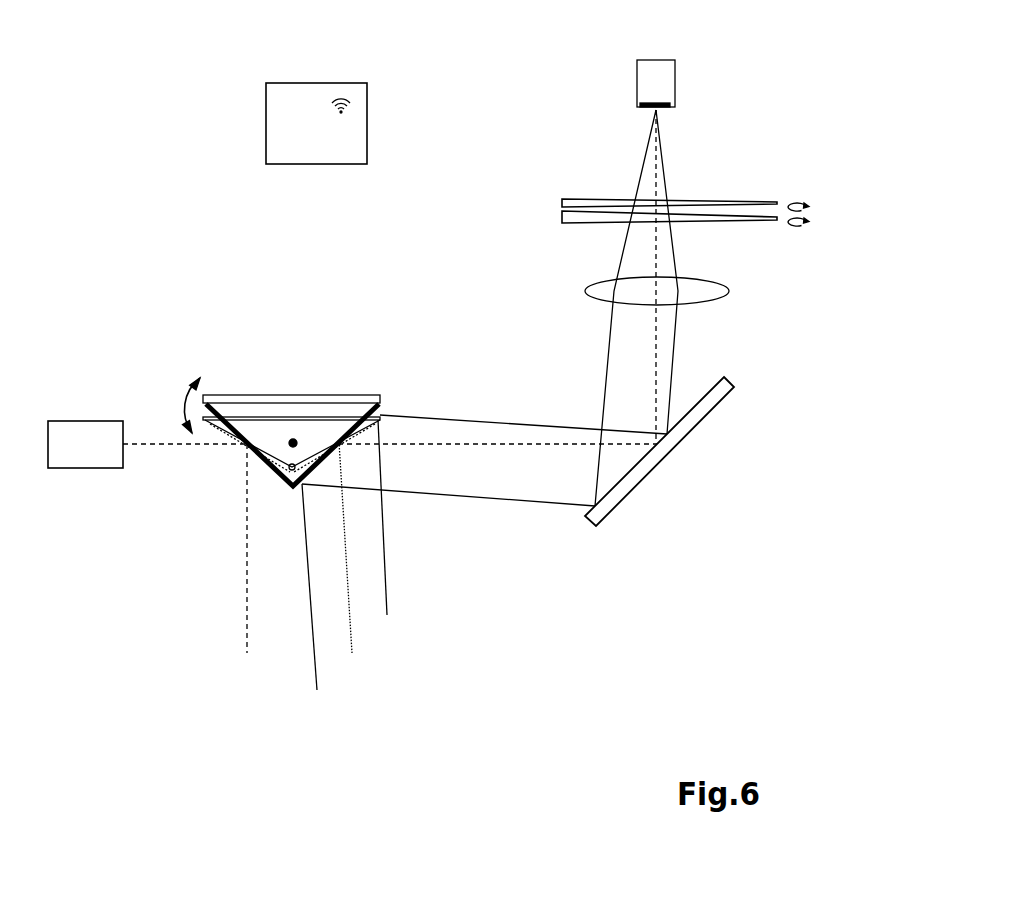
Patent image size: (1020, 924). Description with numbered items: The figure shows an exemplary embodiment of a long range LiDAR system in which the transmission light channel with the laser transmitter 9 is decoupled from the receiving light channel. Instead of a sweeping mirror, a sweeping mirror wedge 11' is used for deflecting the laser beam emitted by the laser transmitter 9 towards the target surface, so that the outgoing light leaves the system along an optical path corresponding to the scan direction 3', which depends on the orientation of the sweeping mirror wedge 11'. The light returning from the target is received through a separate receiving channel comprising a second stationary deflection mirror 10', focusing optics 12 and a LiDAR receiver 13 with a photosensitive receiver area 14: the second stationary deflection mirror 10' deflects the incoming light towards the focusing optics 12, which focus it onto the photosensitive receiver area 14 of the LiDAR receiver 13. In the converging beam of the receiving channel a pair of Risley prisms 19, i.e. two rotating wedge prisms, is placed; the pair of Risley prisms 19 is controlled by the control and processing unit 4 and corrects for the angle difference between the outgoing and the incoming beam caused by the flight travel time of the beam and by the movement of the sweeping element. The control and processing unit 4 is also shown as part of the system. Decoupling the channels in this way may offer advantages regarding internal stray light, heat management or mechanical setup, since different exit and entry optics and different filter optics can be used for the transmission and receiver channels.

The LiDAR receiver 13 is at (711, 65).
The photosensitive receiver area 14 is at (712, 89).
The pair of Risley prisms 19 is at (711, 176).
The focusing optics 12 is at (705, 310).
The second stationary deflection mirror 10' is at (680, 457).
The sweeping mirror wedge 11' is at (275, 366).
The laser transmitter 9 is at (79, 392).
The control and processing unit 4 is at (280, 141).
The scan direction 3' is at (381, 555).